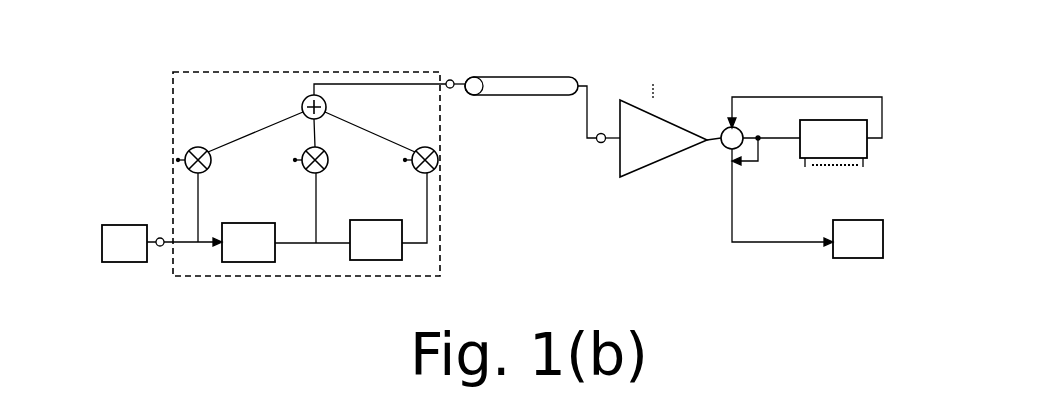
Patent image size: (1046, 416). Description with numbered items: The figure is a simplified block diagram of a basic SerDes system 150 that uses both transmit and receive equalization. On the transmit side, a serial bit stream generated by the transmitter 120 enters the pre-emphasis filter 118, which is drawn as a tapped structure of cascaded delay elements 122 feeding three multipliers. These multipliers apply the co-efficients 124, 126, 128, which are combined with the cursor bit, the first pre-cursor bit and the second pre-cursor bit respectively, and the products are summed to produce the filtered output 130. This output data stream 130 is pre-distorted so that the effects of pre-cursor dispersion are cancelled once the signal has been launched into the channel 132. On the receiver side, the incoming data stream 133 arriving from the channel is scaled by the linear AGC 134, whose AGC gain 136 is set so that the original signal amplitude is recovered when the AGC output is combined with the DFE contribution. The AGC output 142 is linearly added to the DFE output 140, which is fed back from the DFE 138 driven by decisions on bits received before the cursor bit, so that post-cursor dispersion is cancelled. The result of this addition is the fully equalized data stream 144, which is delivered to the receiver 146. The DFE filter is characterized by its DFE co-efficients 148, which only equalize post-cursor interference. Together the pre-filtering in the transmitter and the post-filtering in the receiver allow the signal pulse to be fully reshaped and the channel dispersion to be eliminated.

The pre-emphasis filter 118 is at (244, 72).
The transmitter 120 is at (118, 262).
The delay elements 122 is at (362, 262).
The co-efficient 124 is at (440, 162).
The co-efficient 126 is at (326, 155).
The co-efficient 128 is at (203, 147).
The filtered output 130 is at (350, 83).
The channel 132 is at (518, 77).
The incoming data stream 133 is at (599, 143).
The linear AGC 134 is at (632, 176).
The AGC gain 136 is at (665, 60).
The DFE 138 is at (843, 120).
The DFE output 140 is at (800, 97).
The AGC output 142 is at (709, 125).
The fully equalized data stream 144 is at (745, 243).
The receiver 146 is at (850, 258).
The DFE co-efficients 148 is at (866, 170).
The SerDes system 150 is at (522, 200).